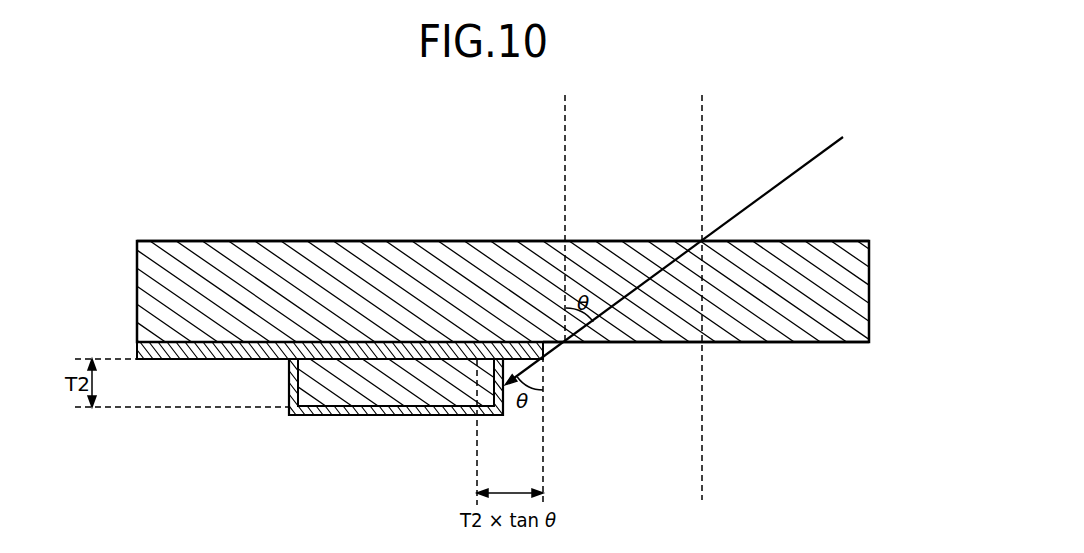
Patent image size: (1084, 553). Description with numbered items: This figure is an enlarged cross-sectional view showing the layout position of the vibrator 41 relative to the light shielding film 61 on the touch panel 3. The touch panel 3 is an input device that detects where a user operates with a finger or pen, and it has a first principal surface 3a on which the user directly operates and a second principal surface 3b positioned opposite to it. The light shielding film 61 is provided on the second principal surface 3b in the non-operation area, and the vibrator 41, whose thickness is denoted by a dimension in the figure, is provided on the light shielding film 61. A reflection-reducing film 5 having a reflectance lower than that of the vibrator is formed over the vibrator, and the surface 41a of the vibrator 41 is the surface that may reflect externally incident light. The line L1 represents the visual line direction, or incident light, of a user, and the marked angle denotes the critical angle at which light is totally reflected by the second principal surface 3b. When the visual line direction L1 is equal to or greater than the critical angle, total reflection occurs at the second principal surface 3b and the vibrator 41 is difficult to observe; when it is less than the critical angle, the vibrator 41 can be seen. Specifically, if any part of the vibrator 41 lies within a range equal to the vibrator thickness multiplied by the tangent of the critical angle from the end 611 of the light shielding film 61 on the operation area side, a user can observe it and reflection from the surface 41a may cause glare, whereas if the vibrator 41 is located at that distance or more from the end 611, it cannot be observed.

The touch panel 3 is at (250, 245).
The first principal surface 3a is at (838, 241).
The second principal surface 3b is at (850, 343).
The light shielding film 61 is at (210, 360).
The end of the light shielding film 611 is at (556, 349).
The reflection-reducing film 5 is at (322, 413).
The vibrator 41 is at (365, 415).
The surface of the vibrator 41a is at (412, 410).
The visual line direction L1 is at (775, 185).